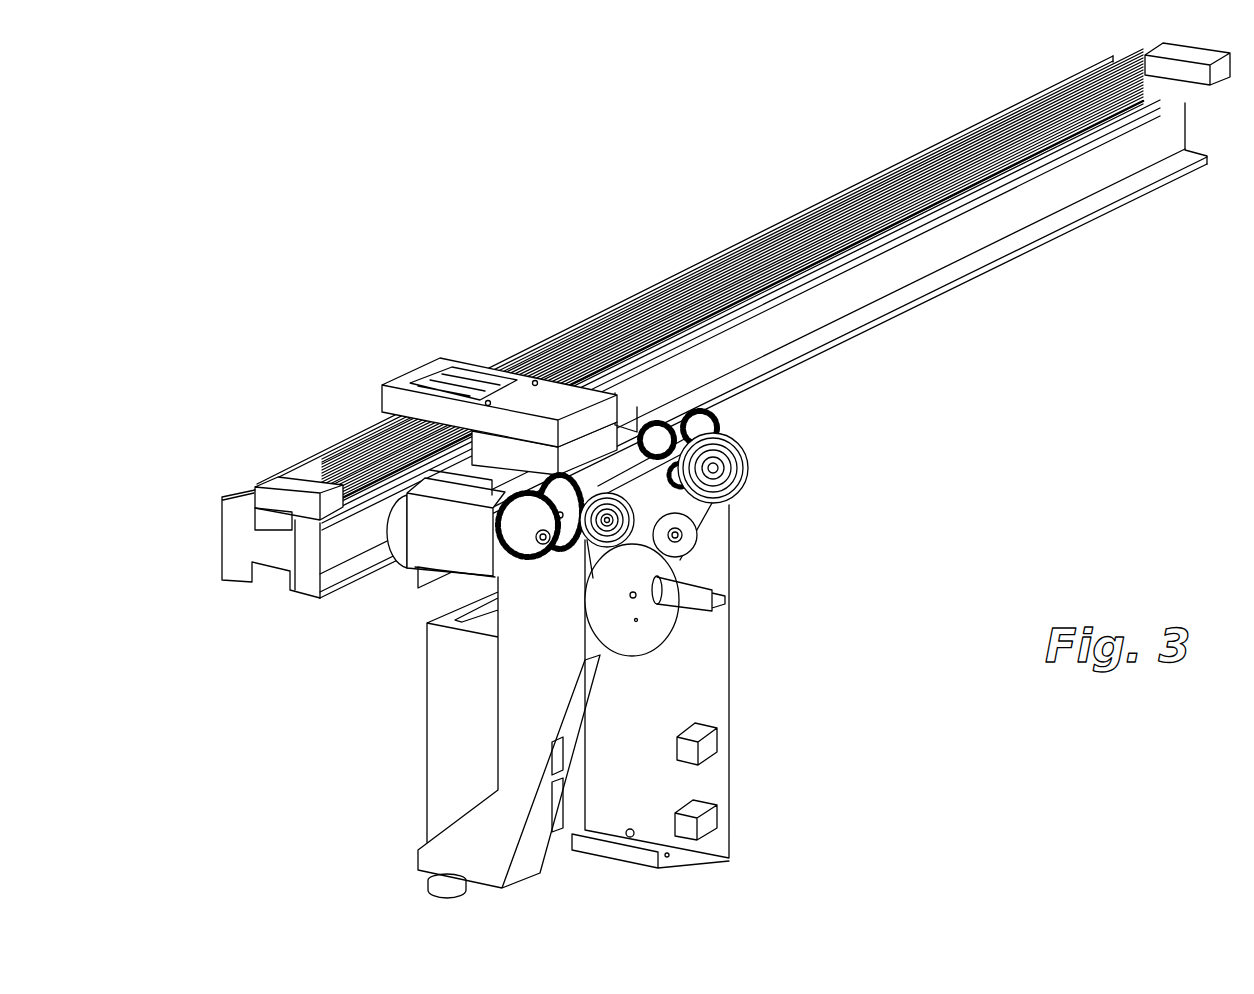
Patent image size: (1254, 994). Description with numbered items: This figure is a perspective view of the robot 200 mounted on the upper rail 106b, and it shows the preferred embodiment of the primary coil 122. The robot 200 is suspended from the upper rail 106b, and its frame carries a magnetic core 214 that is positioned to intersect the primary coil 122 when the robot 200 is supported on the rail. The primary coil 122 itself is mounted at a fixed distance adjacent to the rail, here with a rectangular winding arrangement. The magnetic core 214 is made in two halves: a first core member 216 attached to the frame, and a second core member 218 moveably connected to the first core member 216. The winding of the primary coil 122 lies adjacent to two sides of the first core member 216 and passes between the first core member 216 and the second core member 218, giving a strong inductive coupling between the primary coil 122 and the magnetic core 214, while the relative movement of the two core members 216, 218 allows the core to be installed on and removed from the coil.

The upper rail 106b is at (222, 580).
The primary coil 122 is at (838, 210).
The robot 200 is at (766, 609).
The magnetic core 214 is at (512, 490).
The first core member 216 is at (598, 438).
The second core member 218 is at (395, 383).